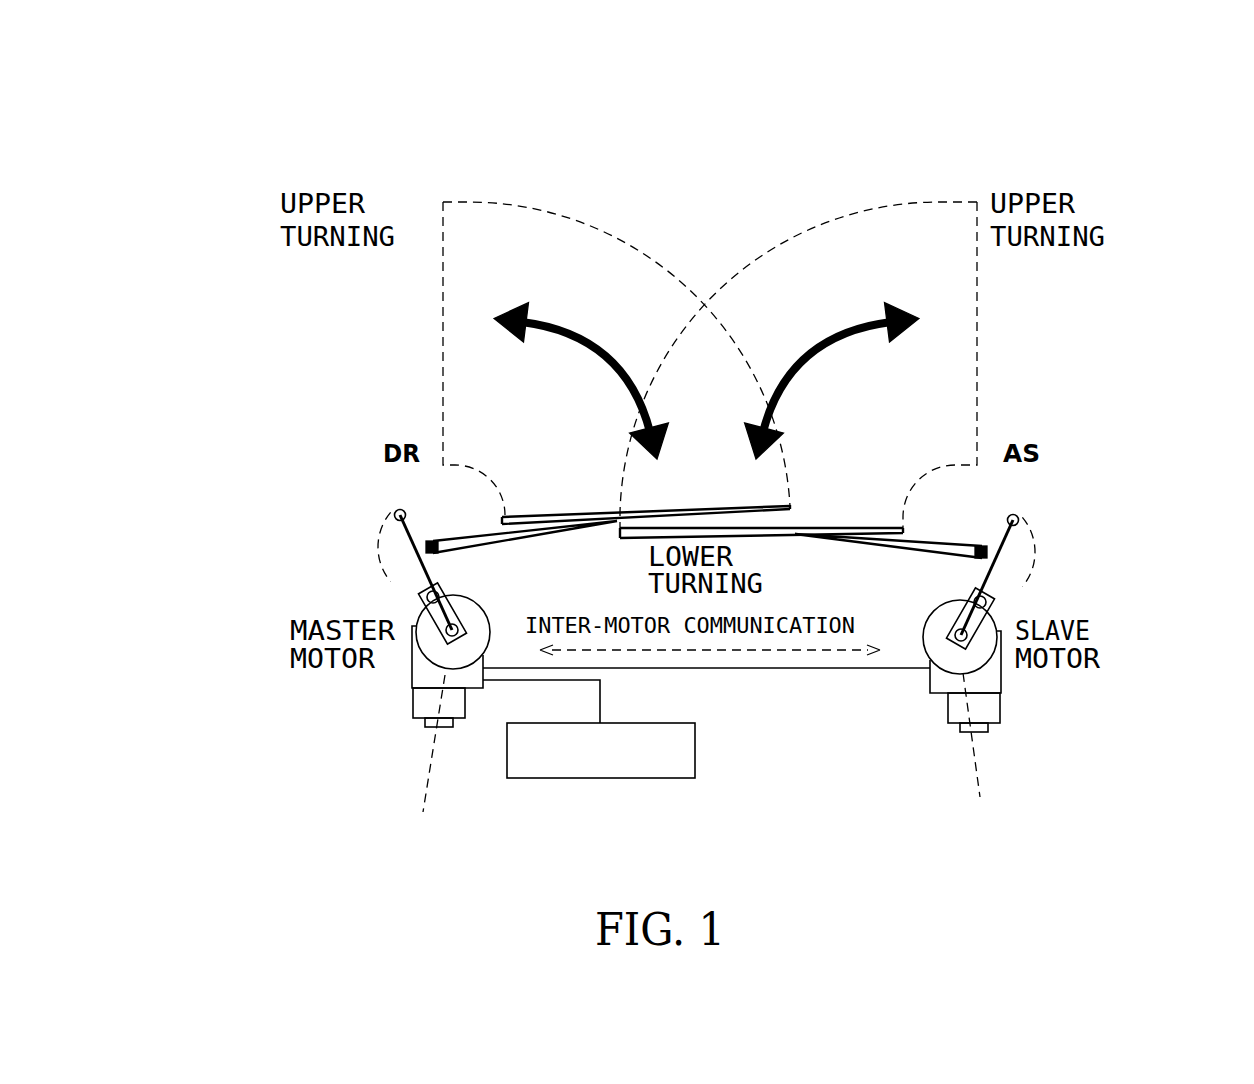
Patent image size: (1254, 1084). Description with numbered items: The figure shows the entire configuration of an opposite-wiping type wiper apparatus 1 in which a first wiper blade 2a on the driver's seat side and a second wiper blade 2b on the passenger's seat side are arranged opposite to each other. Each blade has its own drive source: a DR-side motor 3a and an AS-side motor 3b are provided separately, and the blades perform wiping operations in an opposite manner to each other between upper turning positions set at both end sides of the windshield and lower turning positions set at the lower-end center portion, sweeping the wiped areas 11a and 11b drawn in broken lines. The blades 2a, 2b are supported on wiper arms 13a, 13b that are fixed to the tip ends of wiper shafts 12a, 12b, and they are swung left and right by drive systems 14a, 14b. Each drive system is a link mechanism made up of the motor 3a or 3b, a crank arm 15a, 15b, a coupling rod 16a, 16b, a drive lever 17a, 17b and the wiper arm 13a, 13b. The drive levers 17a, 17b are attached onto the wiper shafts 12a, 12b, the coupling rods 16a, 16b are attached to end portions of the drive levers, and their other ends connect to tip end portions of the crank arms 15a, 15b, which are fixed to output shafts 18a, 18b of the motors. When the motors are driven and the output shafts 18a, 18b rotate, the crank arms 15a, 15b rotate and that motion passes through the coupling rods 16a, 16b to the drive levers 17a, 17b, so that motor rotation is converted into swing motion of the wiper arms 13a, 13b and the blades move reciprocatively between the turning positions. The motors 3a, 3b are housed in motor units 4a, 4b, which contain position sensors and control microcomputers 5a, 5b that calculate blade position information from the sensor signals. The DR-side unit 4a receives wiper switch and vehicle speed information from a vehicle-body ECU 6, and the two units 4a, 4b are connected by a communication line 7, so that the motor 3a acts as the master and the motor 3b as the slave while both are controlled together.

The wiper apparatus 1 is at (727, 172).
The wiper blade 2a is at (568, 516).
The wiper blade 2b is at (842, 527).
The DR-side motor 3a is at (417, 697).
The AS-side motor 3b is at (997, 705).
The motor unit 4a is at (470, 687).
The motor unit 4b is at (932, 688).
The control microcomputer 5a is at (424, 761).
The control microcomputer 5b is at (981, 755).
The ECU 6 is at (697, 752).
The communication line 7 is at (833, 670).
The wiped area 11a is at (532, 233).
The wiped area 11b is at (900, 240).
The wiper shaft 12a is at (438, 555).
The wiper shaft 12b is at (975, 560).
The wiper arm 13a is at (590, 527).
The wiper arm 13b is at (840, 542).
The drive system 14a is at (350, 530).
The drive system 14b is at (1062, 530).
The crank arm 15a is at (410, 616).
The crank arm 15b is at (1000, 612).
The coupling rod 16a is at (427, 547).
The coupling rod 16b is at (987, 550).
The drive lever 17a is at (404, 511).
The drive lever 17b is at (1008, 516).
The output shaft 18a is at (413, 668).
The output shaft 18b is at (995, 658).